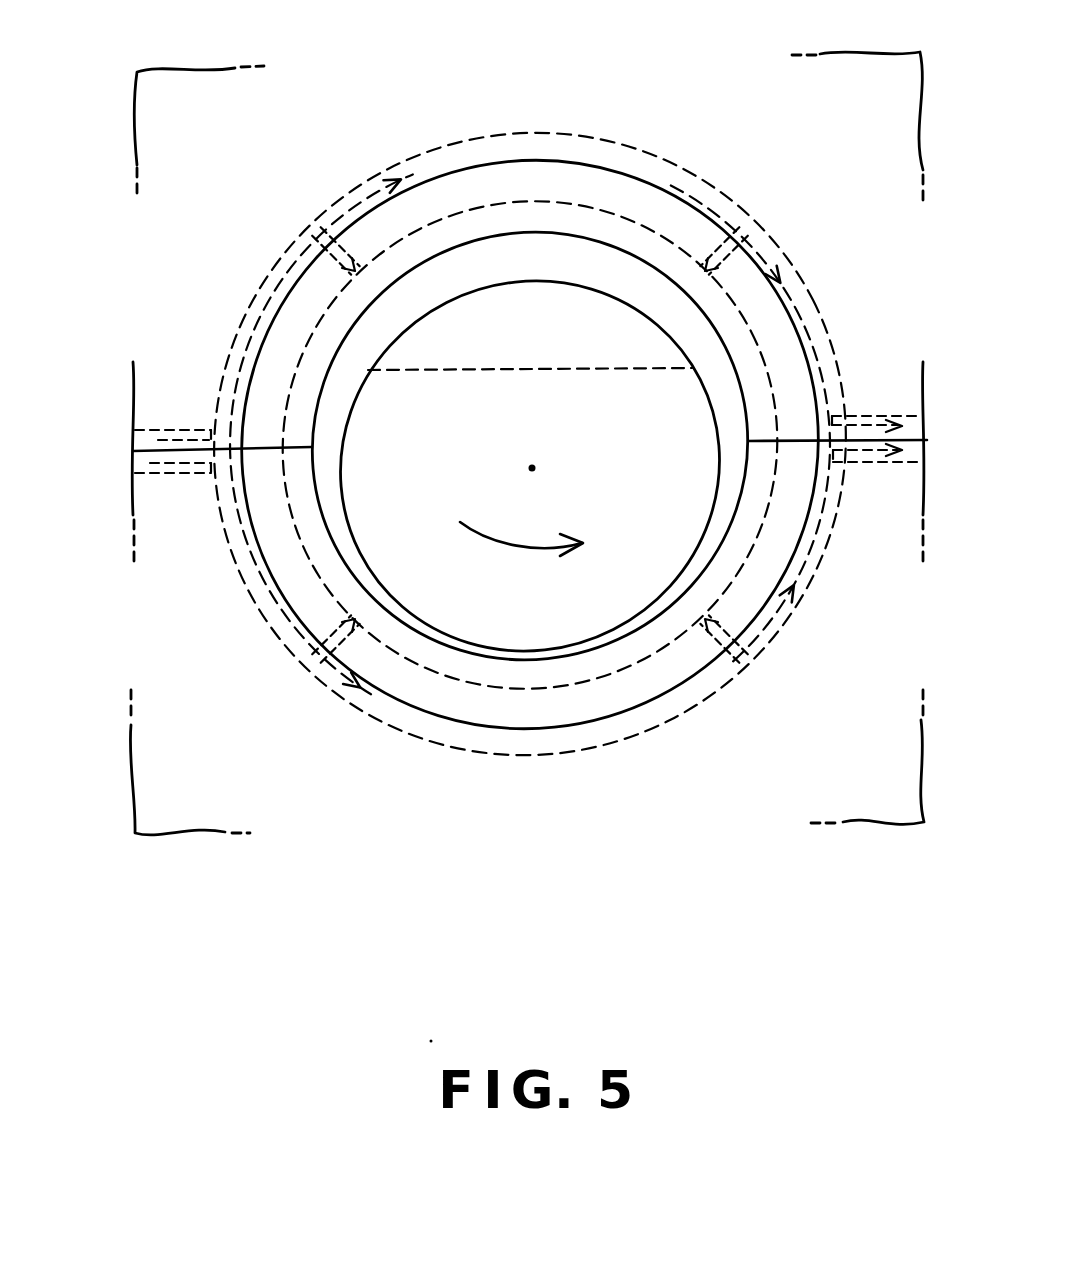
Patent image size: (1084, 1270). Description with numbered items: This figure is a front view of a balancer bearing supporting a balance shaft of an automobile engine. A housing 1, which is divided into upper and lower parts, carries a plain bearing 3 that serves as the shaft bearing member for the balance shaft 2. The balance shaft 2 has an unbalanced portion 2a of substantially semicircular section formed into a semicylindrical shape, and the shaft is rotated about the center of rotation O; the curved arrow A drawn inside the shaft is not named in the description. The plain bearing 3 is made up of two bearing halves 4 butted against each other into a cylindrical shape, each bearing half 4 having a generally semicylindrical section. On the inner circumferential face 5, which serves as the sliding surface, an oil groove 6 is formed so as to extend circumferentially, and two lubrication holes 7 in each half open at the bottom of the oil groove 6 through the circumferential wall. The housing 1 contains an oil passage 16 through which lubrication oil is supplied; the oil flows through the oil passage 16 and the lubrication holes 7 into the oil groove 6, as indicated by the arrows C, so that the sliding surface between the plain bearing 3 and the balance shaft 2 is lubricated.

The housing 1 is at (172, 100).
The balance shaft 2 is at (672, 345).
The unbalanced portion 2a is at (494, 400).
The plain bearing 3 is at (600, 158).
The bearing half 4 is at (528, 160).
The inner circumferential face 5 is at (631, 248).
The oil groove 6 is at (477, 210).
The lubrication hole 7 is at (318, 255).
The oil passage 16 is at (467, 135).
The arrows C is at (700, 194).
The center of rotation O is at (540, 460).
The rotation direction A is at (507, 548).